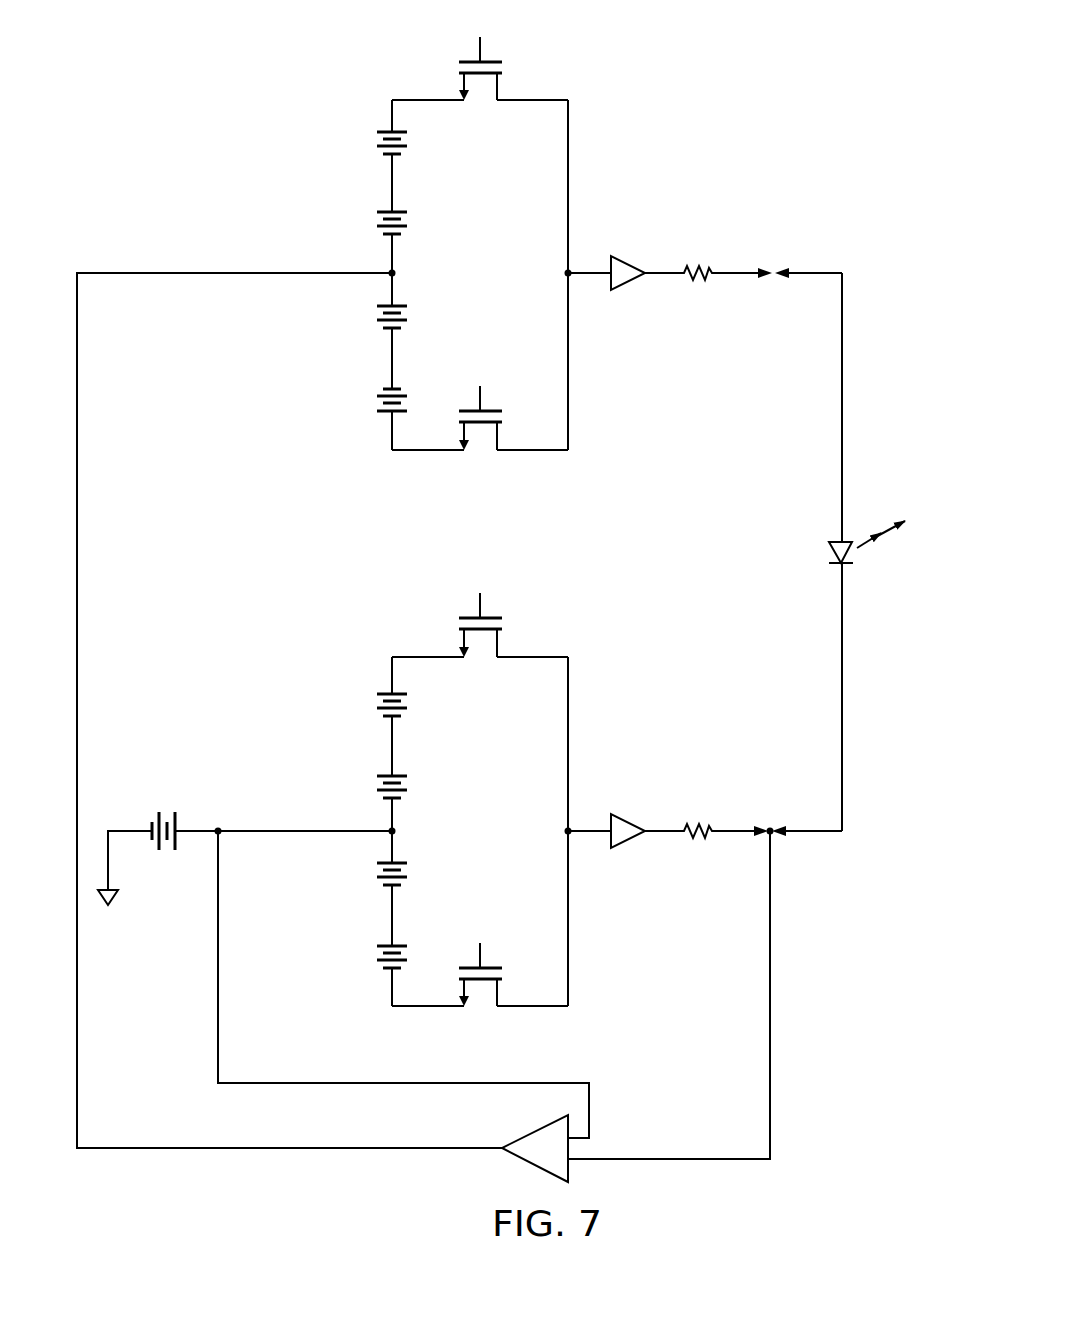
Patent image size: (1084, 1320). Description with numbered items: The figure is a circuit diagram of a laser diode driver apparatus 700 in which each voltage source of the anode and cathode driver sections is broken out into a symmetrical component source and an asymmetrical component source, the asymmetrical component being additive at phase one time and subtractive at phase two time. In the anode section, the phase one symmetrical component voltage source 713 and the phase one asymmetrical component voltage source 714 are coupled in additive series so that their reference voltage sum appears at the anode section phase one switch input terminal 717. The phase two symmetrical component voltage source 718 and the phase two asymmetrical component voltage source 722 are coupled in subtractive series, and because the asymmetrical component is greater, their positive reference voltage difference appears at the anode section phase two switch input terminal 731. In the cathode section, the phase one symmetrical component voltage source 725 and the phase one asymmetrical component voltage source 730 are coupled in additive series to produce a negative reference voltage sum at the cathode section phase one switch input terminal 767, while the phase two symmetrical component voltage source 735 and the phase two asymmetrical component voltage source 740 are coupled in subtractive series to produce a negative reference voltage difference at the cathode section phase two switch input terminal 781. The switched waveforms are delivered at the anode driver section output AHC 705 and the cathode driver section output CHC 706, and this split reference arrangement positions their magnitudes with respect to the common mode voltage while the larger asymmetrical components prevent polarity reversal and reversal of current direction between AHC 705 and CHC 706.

The laser diode driver apparatus 700 is at (698, 103).
The anode section Φ1 switch input terminal 717 is at (417, 100).
The anode section Φ1 asymmetrical component voltage source VS(AΦ1ASYM) 714 is at (420, 143).
The anode section Φ1 symmetrical component voltage source VS(AΦ1S) 713 is at (420, 223).
The anode section Φ2 symmetrical component voltage source VS(AΦ2S) 718 is at (420, 317).
The anode section Φ2 asymmetrical component voltage source VS(AΦ2ASYM) 722 is at (365, 424).
The anode section Φ2 switch input terminal 731 is at (413, 452).
The anode driver section output AHC 705 is at (777, 282).
The cathode section Φ2 switch input terminal 781 is at (417, 657).
The cathode section Φ2 asymmetrical component voltage source VS(CΦ2ASYM) 740 is at (420, 705).
The cathode section Φ2 symmetrical component voltage source VS(CΦ2S) 735 is at (420, 785).
The cathode section Φ1 symmetrical component voltage source VS(CΦ1S) 725 is at (420, 873).
The cathode section Φ1 asymmetrical component voltage source VS(CΦ1ASYM) 730 is at (365, 978).
The cathode section Φ1 switch input terminal 767 is at (413, 1008).
The cathode driver section output CHC 706 is at (775, 840).